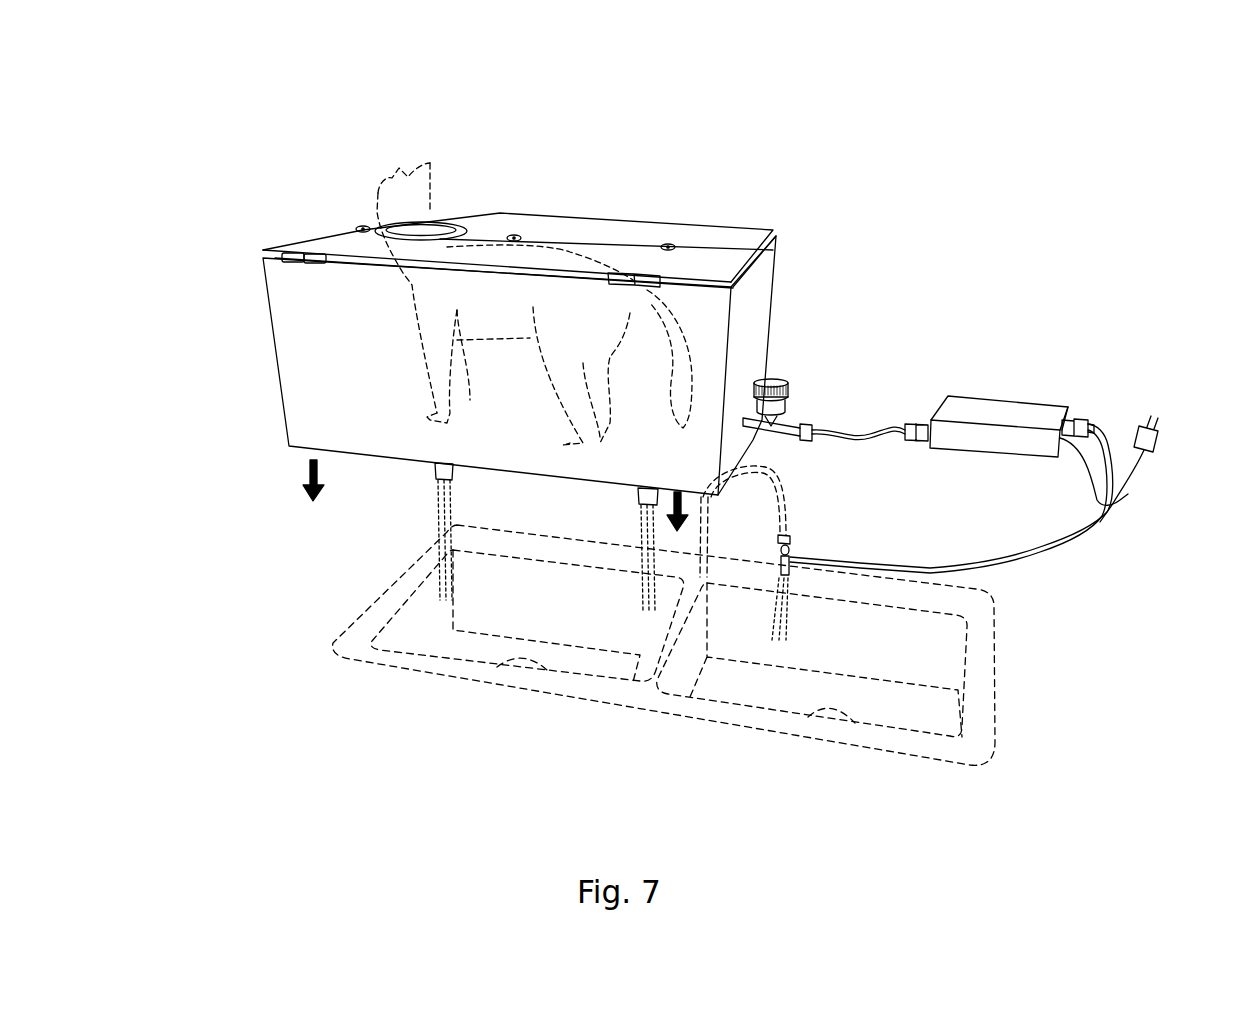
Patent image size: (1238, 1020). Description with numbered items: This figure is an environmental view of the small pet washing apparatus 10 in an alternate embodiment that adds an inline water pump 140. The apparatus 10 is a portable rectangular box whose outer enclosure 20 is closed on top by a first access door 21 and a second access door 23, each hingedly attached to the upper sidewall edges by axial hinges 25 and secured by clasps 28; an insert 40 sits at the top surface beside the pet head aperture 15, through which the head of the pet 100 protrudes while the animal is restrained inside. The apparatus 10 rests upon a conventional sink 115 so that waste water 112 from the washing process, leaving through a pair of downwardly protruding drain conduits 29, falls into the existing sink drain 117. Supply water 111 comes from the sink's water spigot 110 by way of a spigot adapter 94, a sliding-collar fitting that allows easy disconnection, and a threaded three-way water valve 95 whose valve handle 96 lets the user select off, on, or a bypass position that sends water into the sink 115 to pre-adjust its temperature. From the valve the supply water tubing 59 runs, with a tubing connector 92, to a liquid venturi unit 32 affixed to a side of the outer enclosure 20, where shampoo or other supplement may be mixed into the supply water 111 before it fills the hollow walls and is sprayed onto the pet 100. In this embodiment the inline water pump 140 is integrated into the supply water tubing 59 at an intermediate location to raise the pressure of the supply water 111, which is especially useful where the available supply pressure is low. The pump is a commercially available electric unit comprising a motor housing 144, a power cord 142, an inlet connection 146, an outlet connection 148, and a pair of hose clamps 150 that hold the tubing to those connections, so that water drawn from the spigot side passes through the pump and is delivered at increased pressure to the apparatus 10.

The small pet washing apparatus 10 is at (90, 162).
The pet head aperture 15 is at (432, 231).
The outer enclosure 20 is at (308, 418).
The first access door 21 is at (727, 262).
The second access door 23 is at (740, 238).
The axial hinges 25 is at (300, 258).
The clasps 28 is at (363, 228).
The drain conduits 29 is at (637, 493).
The liquid venturi unit 32 is at (783, 405).
The insert 40 is at (460, 230).
The supply water tubing 59 is at (925, 568).
The tubing connector 92 is at (807, 440).
The spigot adapter 94 is at (786, 540).
The three-way water valve 95 is at (790, 553).
The valve handle 96 is at (786, 572).
The pet 100 is at (430, 162).
The water spigot 110 is at (767, 495).
The supply water 111 is at (773, 602).
The waste water 112 is at (440, 505).
The sink 115 is at (433, 588).
The sink drain 117 is at (512, 660).
The inline water pump 140 is at (1082, 392).
The power cord 142 is at (1127, 497).
The motor housing 144 is at (945, 397).
The inlet connection 146 is at (1090, 426).
The outlet connection 148 is at (913, 425).
The hose clamps 150 is at (920, 438).